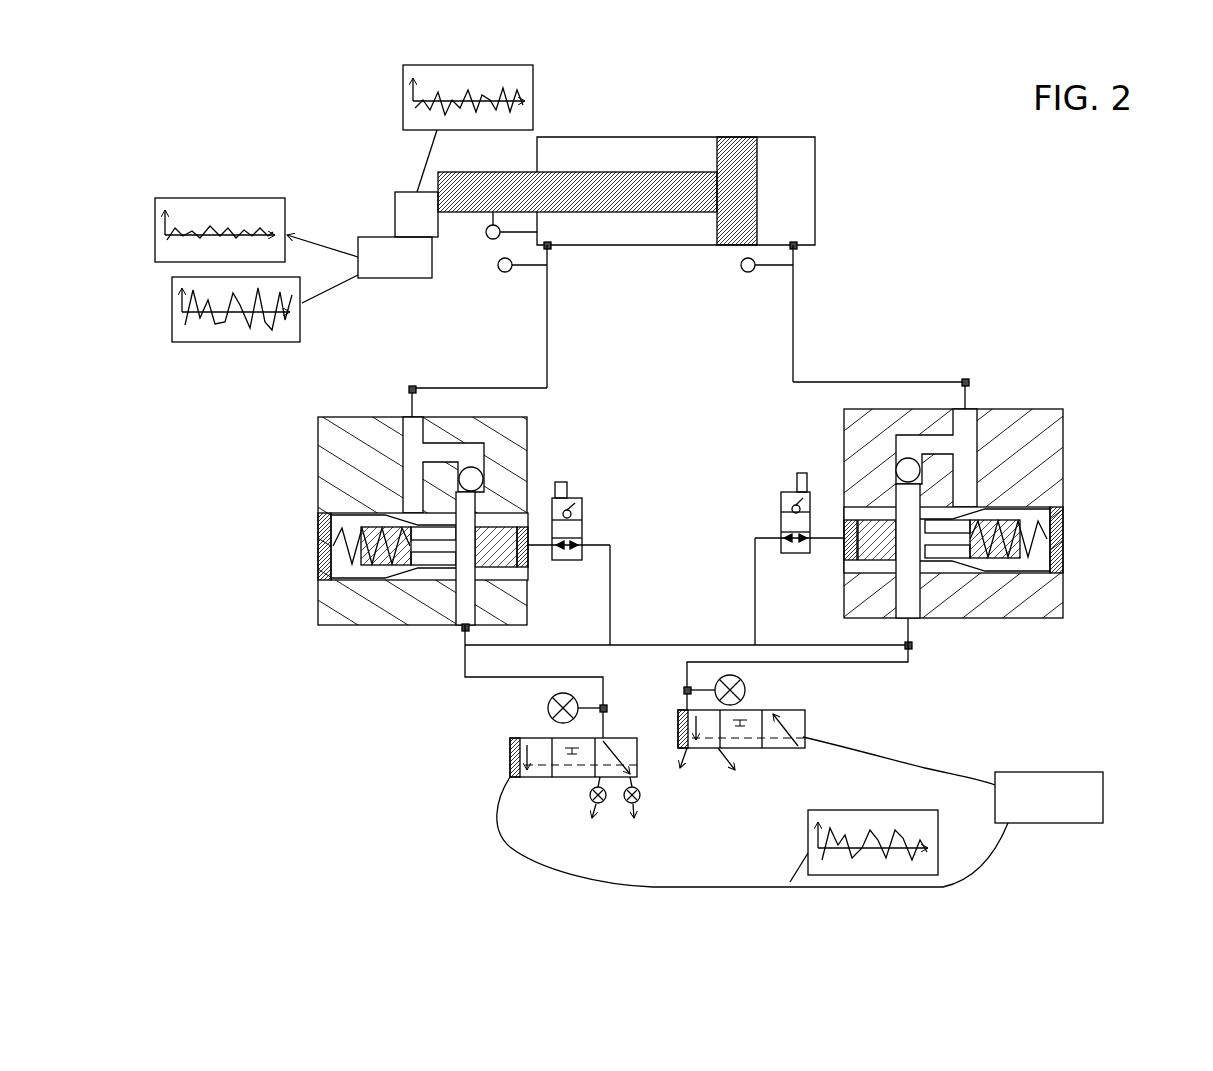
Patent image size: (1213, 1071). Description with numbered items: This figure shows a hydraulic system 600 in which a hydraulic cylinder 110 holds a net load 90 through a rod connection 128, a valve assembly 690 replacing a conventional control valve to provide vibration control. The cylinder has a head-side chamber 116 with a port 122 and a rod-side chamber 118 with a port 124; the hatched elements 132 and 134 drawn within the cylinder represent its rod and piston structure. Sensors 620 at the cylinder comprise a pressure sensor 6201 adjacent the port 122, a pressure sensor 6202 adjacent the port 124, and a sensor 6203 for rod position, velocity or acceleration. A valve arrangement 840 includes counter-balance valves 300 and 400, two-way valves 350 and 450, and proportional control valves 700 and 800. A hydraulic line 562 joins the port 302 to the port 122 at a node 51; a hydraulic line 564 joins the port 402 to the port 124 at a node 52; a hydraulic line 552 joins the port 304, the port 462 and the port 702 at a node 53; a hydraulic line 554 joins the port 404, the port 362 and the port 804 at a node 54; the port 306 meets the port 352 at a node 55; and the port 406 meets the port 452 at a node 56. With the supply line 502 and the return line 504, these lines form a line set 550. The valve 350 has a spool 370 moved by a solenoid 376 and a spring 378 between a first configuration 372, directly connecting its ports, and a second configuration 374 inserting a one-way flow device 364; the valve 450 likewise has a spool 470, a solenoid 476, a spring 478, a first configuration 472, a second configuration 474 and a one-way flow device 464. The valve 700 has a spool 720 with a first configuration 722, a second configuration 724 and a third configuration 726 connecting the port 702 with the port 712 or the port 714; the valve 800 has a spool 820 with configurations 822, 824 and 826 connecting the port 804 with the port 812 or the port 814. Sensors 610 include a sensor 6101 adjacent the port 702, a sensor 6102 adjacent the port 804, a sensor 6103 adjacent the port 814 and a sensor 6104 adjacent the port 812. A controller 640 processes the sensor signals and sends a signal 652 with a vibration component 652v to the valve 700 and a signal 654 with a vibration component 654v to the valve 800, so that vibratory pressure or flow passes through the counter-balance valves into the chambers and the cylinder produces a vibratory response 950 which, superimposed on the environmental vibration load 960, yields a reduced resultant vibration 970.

The hydraulic cylinder 110 is at (816, 167).
The chamber 116 is at (800, 173).
The chamber 118 is at (636, 160).
The port 122 is at (795, 247).
The port 124 is at (549, 247).
The rod connection 128 is at (403, 190).
The piston rod 132 is at (757, 197).
The piston 134 is at (717, 150).
The net load 90 is at (370, 237).
The vibratory response 950 is at (542, 86).
The environmental vibration load 960 is at (203, 346).
The resultant vibration 970 is at (218, 195).
The hydraulic system 600 is at (924, 95).
The sensors 620 is at (616, 259).
The sensor 6201 is at (741, 266).
The sensor 6202 is at (498, 266).
The sensor 6203 is at (486, 234).
The node 51 is at (966, 382).
The node 52 is at (512, 388).
The node 53 is at (906, 662).
The node 54 is at (490, 677).
The node 55 is at (844, 548).
The node 56 is at (528, 548).
The hydraulic line 562 is at (868, 382).
The hydraulic line 564 is at (549, 390).
The counter-balance valve 300 is at (1068, 436).
The port 302 is at (975, 409).
The port 304 is at (911, 650).
The port 306 is at (844, 580).
The valve 350 is at (776, 495).
The first port 352 is at (811, 540).
The second port 362 is at (781, 546).
The one-way flow device 364 is at (793, 510).
The spool 370 is at (786, 492).
The first configuration 372 is at (781, 538).
The second configuration 374 is at (781, 506).
The solenoid 376 is at (802, 473).
The spring 378 is at (800, 570).
The counter-balance valve 400 is at (316, 464).
The port 402 is at (407, 415).
The port 404 is at (465, 648).
The port 406 is at (527, 590).
The valve 450 is at (586, 498).
The first port 452 is at (551, 548).
The second port 462 is at (578, 550).
The one-way flow device 464 is at (571, 516).
The spool 470 is at (568, 498).
The first configuration 472 is at (585, 543).
The second configuration 474 is at (582, 516).
The solenoid 476 is at (564, 482).
The spring 478 is at (560, 562).
The line set 550 is at (612, 611).
The hydraulic line 552 is at (620, 646).
The hydraulic line 554 is at (755, 598).
The supply line 502 is at (634, 805).
The return line 504 is at (594, 805).
The sensors 610 is at (682, 766).
The sensor 6101 is at (746, 688).
The sensor 6102 is at (550, 698).
The sensor 6103 is at (604, 806).
The sensor 6104 is at (640, 801).
The proportional hydraulic control valve 700 is at (817, 715).
The port 702 is at (686, 693).
The port 712 is at (726, 770).
The port 714 is at (686, 763).
The spool 720 is at (806, 740).
The first configuration 722 is at (784, 712).
The second configuration 724 is at (804, 749).
The third configuration 726 is at (685, 726).
The proportional hydraulic control valve 800 is at (508, 746).
The port 804 is at (604, 737).
The port 812 is at (627, 804).
The port 814 is at (590, 778).
The spool 820 is at (510, 765).
The first configuration 822 is at (528, 739).
The second configuration 824 is at (560, 778).
The third configuration 826 is at (611, 746).
The valve arrangement 840 is at (322, 672).
The controller 640 is at (1106, 785).
The signal 652 is at (926, 769).
The vibration component 652v is at (971, 779).
The signal 654 is at (714, 890).
The vibration component 654v is at (862, 812).
The valve assembly 690 is at (1054, 689).